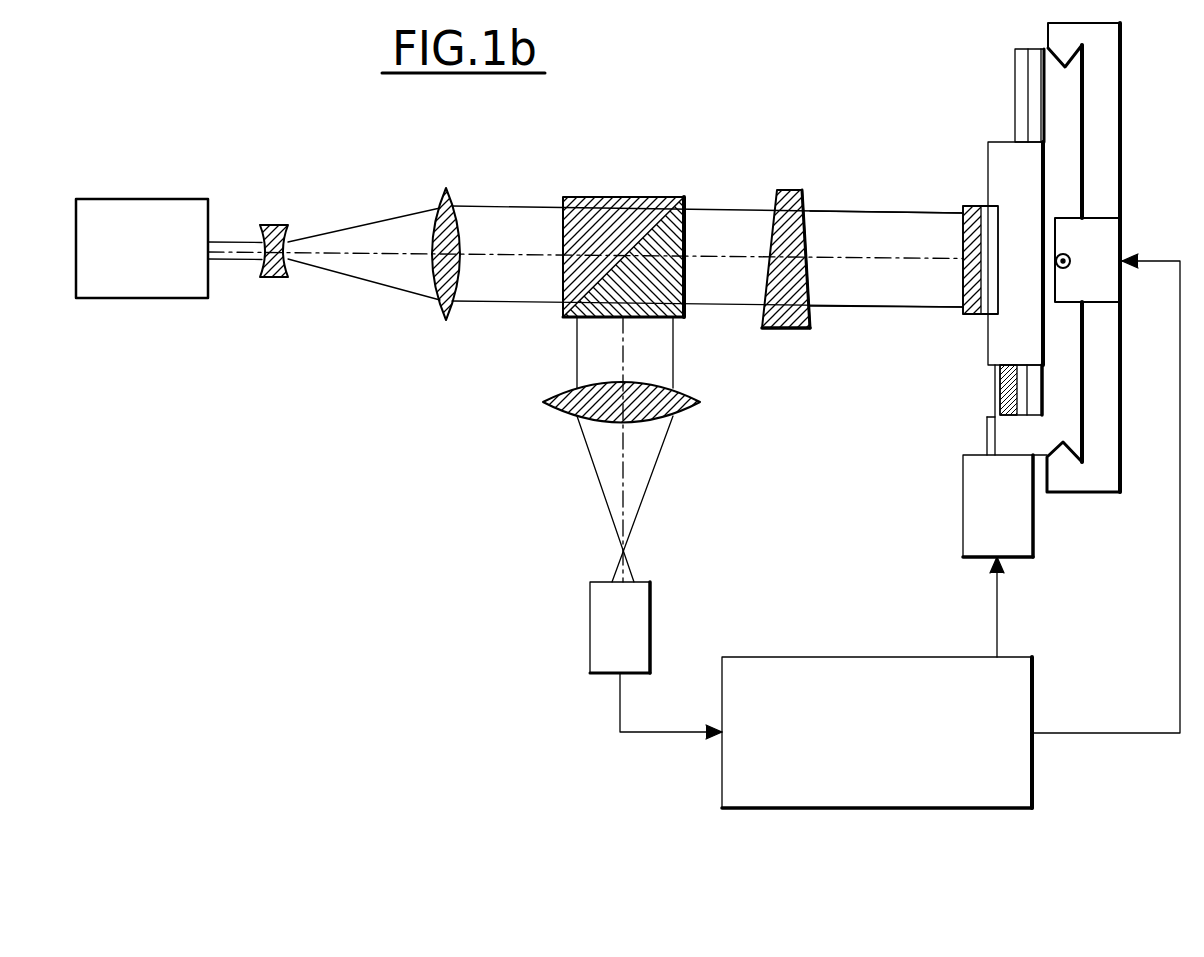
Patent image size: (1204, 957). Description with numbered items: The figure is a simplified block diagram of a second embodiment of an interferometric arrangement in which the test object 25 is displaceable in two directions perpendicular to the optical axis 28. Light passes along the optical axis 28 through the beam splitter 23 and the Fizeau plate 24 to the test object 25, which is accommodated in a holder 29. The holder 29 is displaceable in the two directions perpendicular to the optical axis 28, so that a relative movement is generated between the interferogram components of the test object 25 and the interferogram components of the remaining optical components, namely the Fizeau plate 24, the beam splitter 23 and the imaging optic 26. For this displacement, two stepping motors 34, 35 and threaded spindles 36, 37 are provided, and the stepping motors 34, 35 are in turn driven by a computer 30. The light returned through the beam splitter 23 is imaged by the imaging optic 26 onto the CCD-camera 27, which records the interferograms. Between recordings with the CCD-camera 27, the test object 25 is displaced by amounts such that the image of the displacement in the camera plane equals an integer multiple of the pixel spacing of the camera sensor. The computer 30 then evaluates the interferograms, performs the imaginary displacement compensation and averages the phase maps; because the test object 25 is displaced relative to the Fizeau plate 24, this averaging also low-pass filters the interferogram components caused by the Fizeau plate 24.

The beam splitter 23 is at (611, 199).
The Fizeau plate 24 is at (787, 189).
The test object 25 is at (963, 287).
The imaging optic 26 is at (694, 410).
The CCD-camera 27 is at (632, 627).
The optical axis 28 is at (888, 258).
The holder 29 is at (1107, 170).
The computer 30 is at (1012, 705).
The stepping motor 34 is at (1022, 542).
The stepping motor 35 is at (1107, 247).
The threaded spindle 36 is at (999, 392).
The threaded spindle 37 is at (1069, 267).